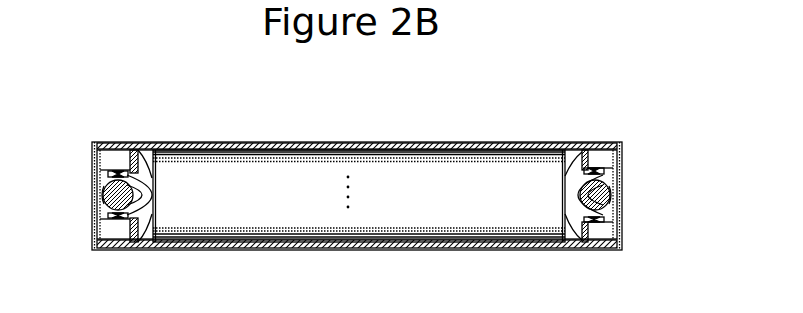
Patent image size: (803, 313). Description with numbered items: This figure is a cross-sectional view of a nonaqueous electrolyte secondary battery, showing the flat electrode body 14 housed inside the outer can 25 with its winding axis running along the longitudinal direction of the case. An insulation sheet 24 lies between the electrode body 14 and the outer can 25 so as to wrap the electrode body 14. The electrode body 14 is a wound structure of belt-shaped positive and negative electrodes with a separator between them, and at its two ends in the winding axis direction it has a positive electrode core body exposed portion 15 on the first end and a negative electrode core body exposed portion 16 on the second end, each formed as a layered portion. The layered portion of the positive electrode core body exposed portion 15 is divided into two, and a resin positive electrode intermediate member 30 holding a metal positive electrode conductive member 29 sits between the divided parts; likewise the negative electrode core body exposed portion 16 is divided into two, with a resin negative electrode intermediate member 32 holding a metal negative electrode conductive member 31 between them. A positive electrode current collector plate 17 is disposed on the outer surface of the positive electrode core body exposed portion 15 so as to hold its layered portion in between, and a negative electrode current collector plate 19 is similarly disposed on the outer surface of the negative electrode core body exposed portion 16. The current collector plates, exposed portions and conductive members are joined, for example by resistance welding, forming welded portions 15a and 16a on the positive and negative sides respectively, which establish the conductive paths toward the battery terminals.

The electrode body 14 is at (474, 178).
The positive electrode core body exposed portion 15 is at (565, 152).
The welded portion 15a is at (593, 148).
The negative electrode core body exposed portion 16 is at (152, 160).
The welded portion 16a is at (131, 168).
The positive electrode current collector plate 17 is at (616, 148).
The negative electrode current collector plate 19 is at (100, 165).
The insulation sheet 24 is at (305, 150).
The outer can 25 is at (262, 144).
The positive electrode conductive member 29 is at (605, 182).
The positive electrode intermediate member 30 is at (610, 190).
The negative electrode conductive member 31 is at (107, 184).
The negative electrode intermediate member 32 is at (103, 193).